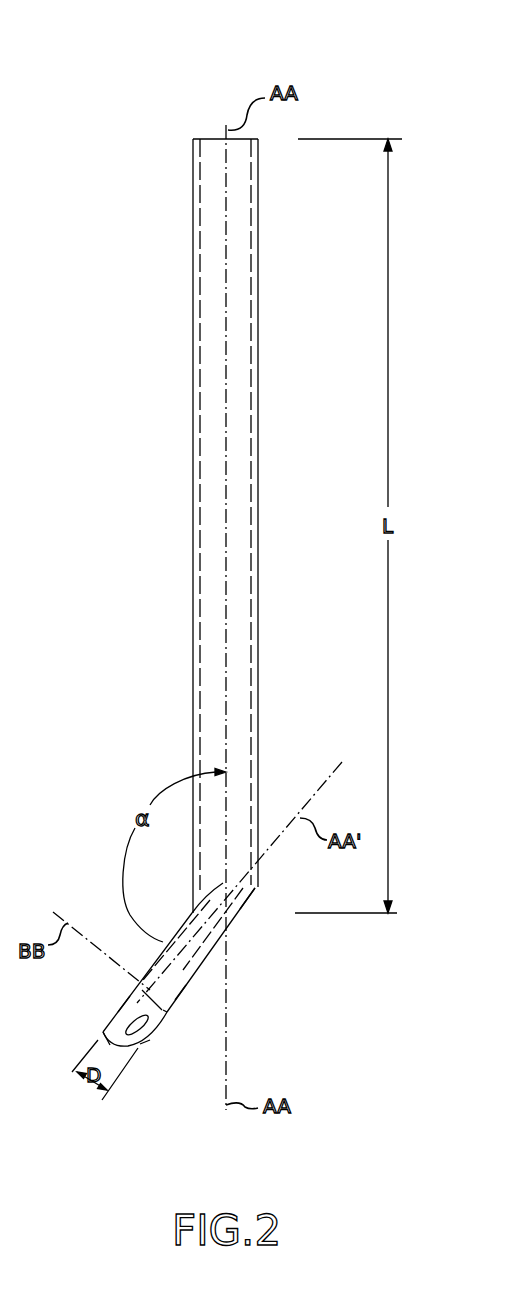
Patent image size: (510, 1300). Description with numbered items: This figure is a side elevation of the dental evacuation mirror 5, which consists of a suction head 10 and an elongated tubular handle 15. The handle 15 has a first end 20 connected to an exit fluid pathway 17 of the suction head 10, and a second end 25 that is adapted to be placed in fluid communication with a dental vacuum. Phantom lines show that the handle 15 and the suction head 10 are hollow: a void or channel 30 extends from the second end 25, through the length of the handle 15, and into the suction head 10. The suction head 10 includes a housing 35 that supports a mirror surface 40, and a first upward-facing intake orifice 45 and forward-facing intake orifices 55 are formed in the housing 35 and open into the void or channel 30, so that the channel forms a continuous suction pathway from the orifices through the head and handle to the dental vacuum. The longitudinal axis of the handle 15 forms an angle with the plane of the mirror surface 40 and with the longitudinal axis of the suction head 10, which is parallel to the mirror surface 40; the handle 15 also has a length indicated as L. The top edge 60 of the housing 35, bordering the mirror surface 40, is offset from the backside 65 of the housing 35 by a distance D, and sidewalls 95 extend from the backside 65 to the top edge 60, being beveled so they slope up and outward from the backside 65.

The dental evacuation mirror 5 is at (172, 80).
The suction head 10 is at (103, 890).
The elongated tubular handle 15 is at (258, 478).
The exit fluid pathway 17 is at (232, 905).
The first end 20 is at (258, 890).
The second end 25 is at (262, 138).
The void or channel 30 is at (184, 350).
The housing 35 is at (100, 1030).
The mirror surface 40 is at (110, 978).
The first upward-facing intake orifice 45 is at (163, 1010).
The forward-facing intake orifices 55 is at (150, 1038).
The top edge 60 is at (118, 1015).
The backside 65 is at (186, 985).
The sidewalls 95 is at (137, 1036).